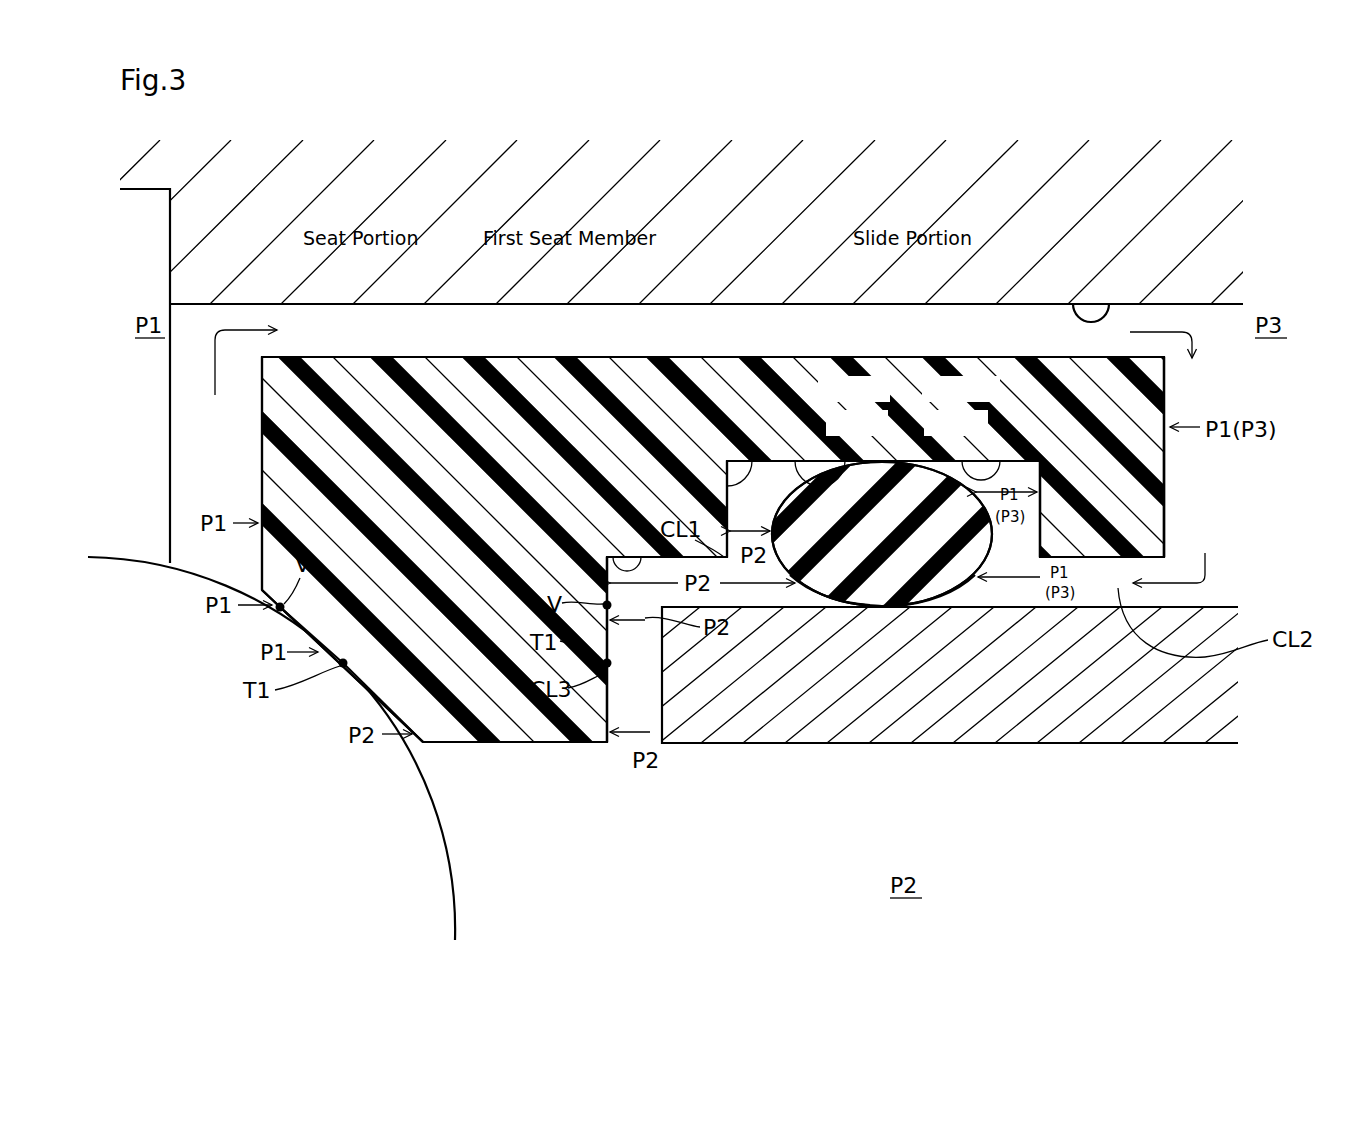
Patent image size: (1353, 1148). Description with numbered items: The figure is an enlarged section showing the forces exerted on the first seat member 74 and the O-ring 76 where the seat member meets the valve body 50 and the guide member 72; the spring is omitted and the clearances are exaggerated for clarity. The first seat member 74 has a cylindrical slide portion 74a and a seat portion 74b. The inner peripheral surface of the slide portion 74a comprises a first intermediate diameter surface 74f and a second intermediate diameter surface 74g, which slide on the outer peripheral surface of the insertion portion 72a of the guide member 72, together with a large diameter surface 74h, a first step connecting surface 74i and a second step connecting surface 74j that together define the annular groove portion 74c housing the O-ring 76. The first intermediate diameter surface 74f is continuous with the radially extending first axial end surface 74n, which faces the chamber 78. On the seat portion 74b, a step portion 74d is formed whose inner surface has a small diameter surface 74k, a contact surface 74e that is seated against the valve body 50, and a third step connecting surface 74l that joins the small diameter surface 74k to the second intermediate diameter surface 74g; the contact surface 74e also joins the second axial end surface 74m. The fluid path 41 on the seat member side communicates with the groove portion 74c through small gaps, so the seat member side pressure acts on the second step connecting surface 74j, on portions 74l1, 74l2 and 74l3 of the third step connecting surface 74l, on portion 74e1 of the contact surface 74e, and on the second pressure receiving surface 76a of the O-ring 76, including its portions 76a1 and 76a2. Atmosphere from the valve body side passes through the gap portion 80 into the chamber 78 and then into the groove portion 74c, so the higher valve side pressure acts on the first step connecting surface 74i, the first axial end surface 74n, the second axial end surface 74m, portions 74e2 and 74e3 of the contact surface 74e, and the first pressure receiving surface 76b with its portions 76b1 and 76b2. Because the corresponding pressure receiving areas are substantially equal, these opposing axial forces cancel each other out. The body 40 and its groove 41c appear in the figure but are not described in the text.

The first valve body 40 is at (168, 232).
The fluid path 41 is at (1077, 898).
The groove of second valve body 41c is at (1092, 303).
The valve body 50 is at (162, 556).
The guide member 72 is at (950, 675).
The insertion portion 72a is at (1174, 720).
The first seat member 74 is at (541, 352).
The slide portion 74a is at (880, 456).
The seat portion 74b is at (341, 388).
The groove portion 74c is at (775, 488).
The step portion 74d is at (504, 722).
The contact surface 74e is at (350, 683).
The portion of the contact surface 74e1 is at (365, 700).
The portion of the contact surface 74e2 is at (264, 596).
The portion of the contact surface 74e3 is at (295, 622).
The first intermediate diameter surface 74f is at (1088, 560).
The second intermediate diameter surface 74g is at (620, 553).
The large diameter surface 74h is at (1030, 478).
The first step connecting surface 74i is at (1088, 498).
The second step connecting surface 74j is at (760, 456).
The small diameter surface 74k is at (583, 743).
The third step connecting surface 74l is at (610, 680).
The portion of the third step connecting surface 74l1 is at (609, 717).
The portion of the third step connecting surface 74l2 is at (603, 582).
The portion of the third step connecting surface 74l3 is at (609, 641).
The second axial end surface 74m is at (260, 413).
The first axial end surface 74n is at (1168, 468).
The O-ring 76 is at (888, 565).
The second pressure receiving surface 76a is at (797, 358).
The portion of the second pressure receiving surface 76a1 is at (835, 456).
The portion of the second pressure receiving surface 76a2 is at (800, 598).
The first pressure receiving surface 76b is at (898, 358).
The portion of the first pressure receiving surface 76b1 is at (979, 456).
The portion of the first pressure receiving surface 76b2 is at (960, 590).
The chamber 78 is at (1297, 405).
The gap portion 80 is at (428, 328).